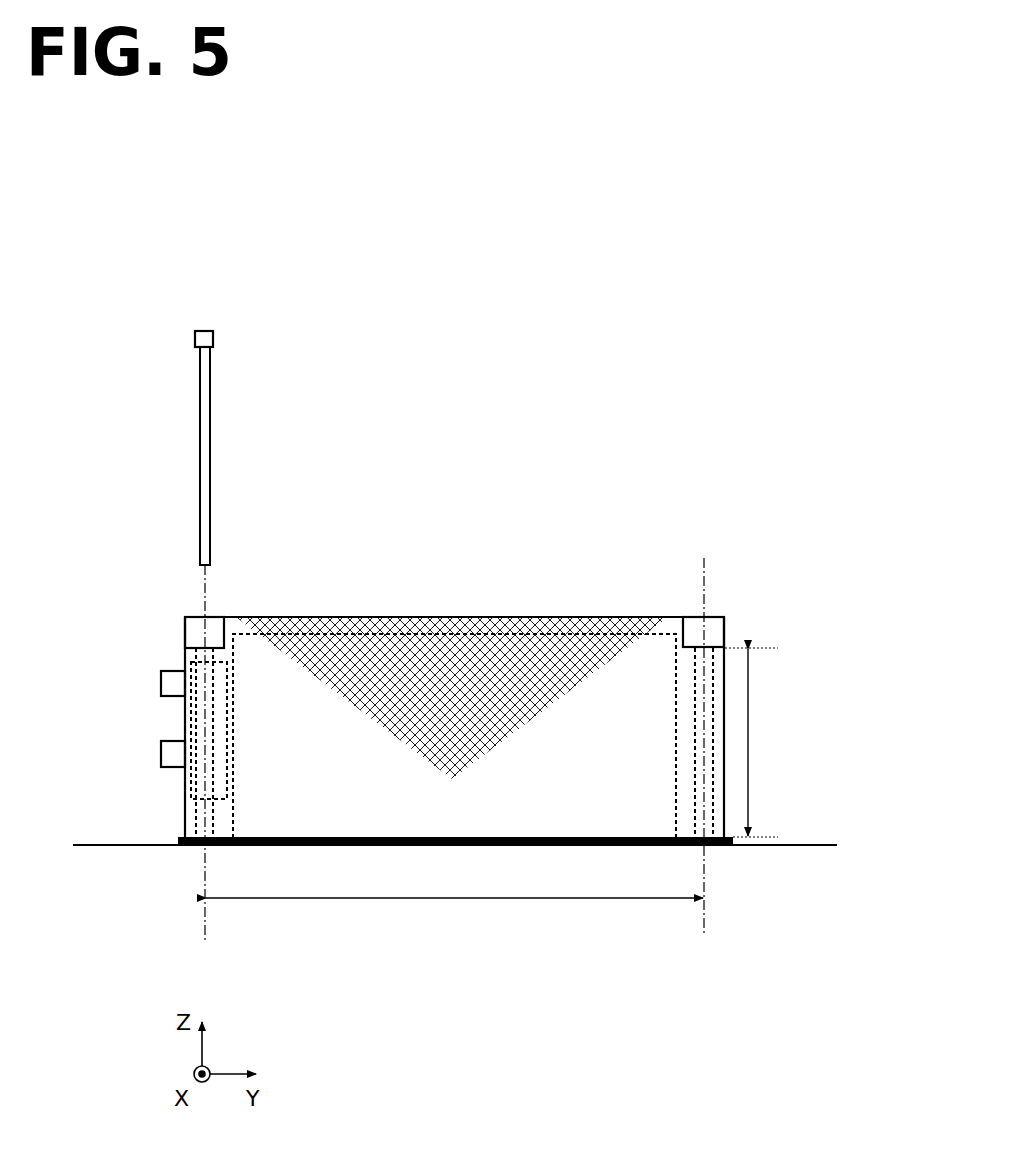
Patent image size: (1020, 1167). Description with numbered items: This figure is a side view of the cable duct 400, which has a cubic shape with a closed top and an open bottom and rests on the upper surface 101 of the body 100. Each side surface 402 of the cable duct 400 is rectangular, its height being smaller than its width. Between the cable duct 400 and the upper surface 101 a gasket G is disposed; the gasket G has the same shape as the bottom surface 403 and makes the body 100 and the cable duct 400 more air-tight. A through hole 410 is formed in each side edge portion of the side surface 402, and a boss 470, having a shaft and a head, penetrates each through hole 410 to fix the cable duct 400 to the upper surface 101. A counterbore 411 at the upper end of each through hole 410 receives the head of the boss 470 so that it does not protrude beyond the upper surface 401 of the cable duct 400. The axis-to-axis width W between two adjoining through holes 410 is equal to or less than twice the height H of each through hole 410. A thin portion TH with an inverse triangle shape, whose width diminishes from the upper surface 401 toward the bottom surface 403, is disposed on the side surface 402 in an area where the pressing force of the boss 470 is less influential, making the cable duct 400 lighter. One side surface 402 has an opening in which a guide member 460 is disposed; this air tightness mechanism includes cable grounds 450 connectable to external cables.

The body 100 is at (778, 868).
The upper surface 101 is at (132, 846).
The cable duct 400 is at (410, 701).
The upper surface 401 is at (440, 616).
The side surface 402 is at (543, 780).
The bottom surface 403 is at (468, 860).
The through hole 410 is at (214, 746).
The counterbore 411 is at (692, 647).
The cable ground 450 is at (161, 683).
The guide member 460 is at (229, 685).
The boss 470 is at (210, 437).
The thin portion TH is at (392, 680).
The gasket G is at (367, 838).
The height H is at (751, 742).
The axis-to-axis width W is at (454, 914).